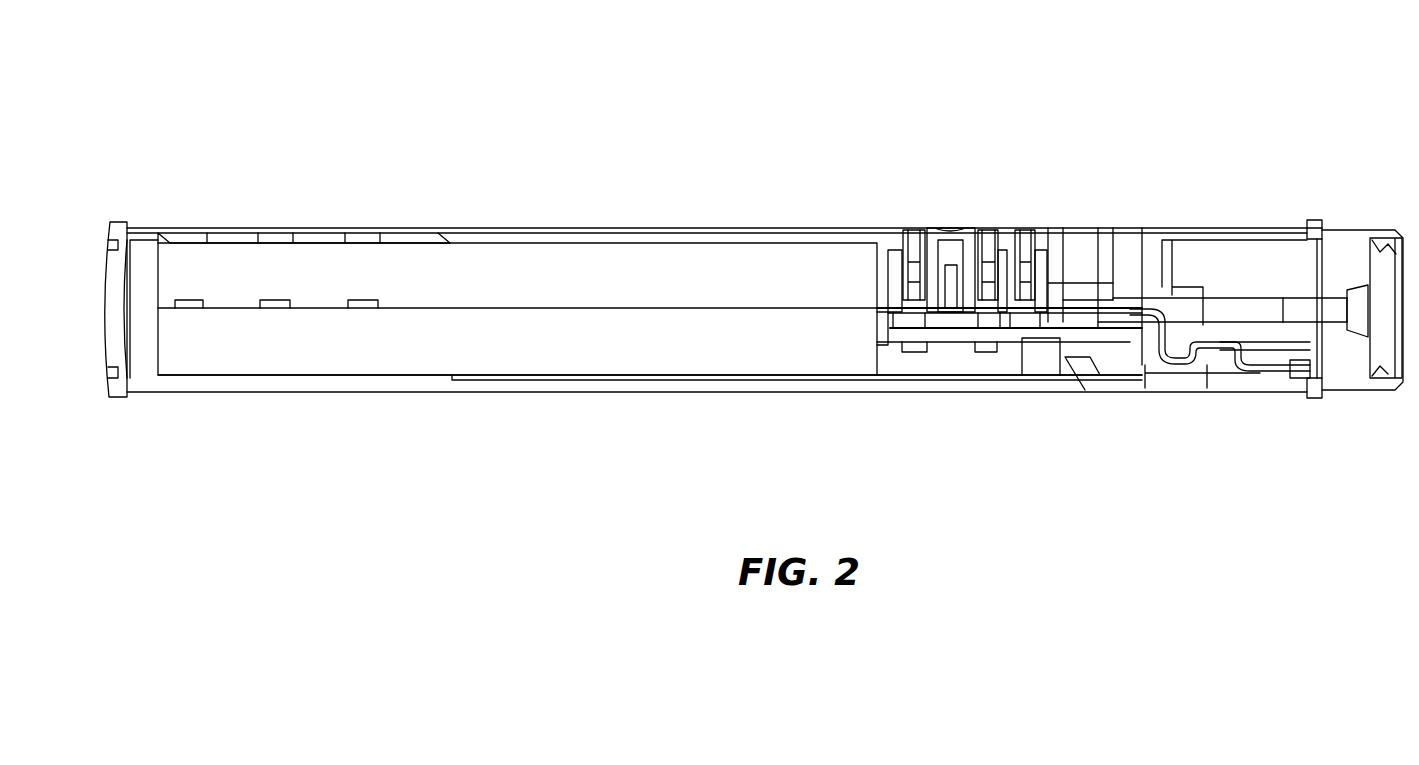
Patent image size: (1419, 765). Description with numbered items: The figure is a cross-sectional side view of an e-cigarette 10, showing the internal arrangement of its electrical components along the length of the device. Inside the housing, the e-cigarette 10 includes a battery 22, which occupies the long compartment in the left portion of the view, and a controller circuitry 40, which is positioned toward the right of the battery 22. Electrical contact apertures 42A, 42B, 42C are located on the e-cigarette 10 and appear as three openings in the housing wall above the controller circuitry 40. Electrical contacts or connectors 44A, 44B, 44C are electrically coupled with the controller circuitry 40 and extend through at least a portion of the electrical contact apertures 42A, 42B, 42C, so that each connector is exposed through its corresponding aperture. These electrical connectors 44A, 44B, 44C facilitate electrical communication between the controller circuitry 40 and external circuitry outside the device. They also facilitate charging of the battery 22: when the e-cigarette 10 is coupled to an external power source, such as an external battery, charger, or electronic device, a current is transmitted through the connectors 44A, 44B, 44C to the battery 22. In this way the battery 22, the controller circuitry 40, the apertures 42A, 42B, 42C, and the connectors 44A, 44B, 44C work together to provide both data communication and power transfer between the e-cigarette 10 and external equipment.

The e-cigarette 10 is at (598, 92).
The battery 22 is at (316, 268).
The controller circuitry 40 is at (950, 333).
The electrical contact aperture 42A is at (914, 228).
The electrical contact aperture 42B is at (988, 228).
The electrical contact aperture 42C is at (1030, 228).
The electrical connector 44A is at (863, 228).
The electrical connector 44B is at (990, 288).
The electrical connector 44C is at (1073, 228).